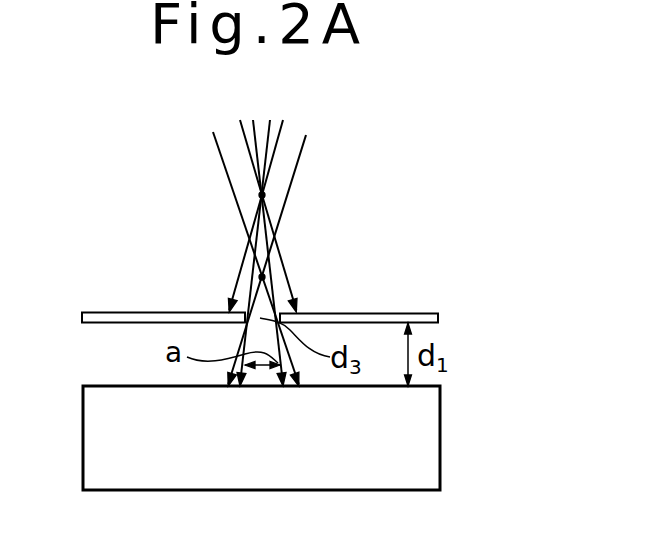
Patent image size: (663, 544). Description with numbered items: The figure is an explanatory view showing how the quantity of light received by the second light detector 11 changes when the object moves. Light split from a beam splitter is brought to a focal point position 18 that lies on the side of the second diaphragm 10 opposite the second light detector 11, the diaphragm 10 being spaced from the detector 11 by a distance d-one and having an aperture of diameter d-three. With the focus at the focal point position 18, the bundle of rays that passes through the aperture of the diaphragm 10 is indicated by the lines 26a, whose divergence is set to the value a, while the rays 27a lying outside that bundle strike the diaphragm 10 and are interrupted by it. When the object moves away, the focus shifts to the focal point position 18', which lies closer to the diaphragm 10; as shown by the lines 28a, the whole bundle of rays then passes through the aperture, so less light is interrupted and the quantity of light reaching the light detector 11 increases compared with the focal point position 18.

The second diaphragm 10 is at (438, 318).
The second light detector 11 is at (440, 427).
The focal point position 18 is at (325, 192).
The focal point position 18' is at (328, 254).
The lines indicating bundle of rays 26a is at (250, 123).
The rays outside the bundle 27a is at (245, 269).
The lines indicating rays at shifted focal point 28a is at (218, 152).